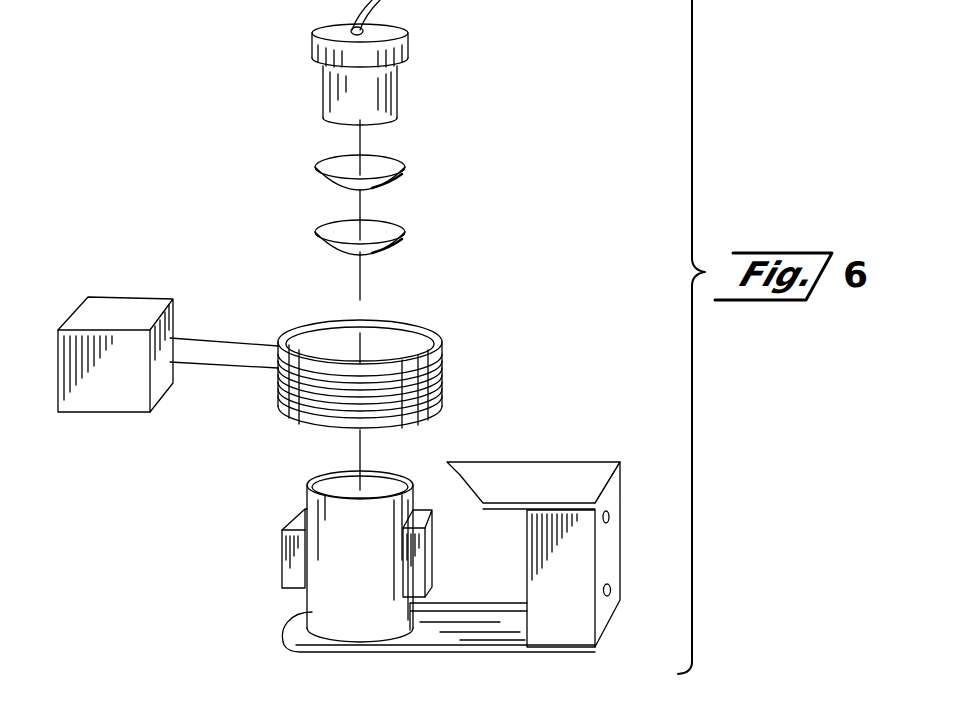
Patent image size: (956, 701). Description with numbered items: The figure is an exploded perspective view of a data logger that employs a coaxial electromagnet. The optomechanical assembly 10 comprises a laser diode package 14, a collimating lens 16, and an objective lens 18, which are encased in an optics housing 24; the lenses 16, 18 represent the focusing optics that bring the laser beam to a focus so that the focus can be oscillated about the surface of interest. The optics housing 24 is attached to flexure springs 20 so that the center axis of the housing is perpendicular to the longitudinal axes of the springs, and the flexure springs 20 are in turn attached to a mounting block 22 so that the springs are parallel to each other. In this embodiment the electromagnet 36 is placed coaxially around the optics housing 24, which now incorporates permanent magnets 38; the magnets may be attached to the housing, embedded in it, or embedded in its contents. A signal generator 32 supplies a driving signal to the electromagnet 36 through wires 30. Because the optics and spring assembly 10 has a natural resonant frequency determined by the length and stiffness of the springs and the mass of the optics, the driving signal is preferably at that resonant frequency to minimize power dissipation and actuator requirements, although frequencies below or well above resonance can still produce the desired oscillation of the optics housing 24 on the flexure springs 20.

The optomechanical assembly 10 is at (272, 611).
The laser diode package 14 is at (395, 95).
The collimating lens 16 is at (403, 172).
The objective lens 18 is at (402, 235).
The flexure springs 20 is at (540, 472).
The mounting block 22 is at (608, 568).
The optics housing 24 is at (325, 605).
The wires 30 is at (232, 342).
The signal generator 32 is at (112, 310).
The electromagnet 36 is at (282, 407).
The permanent magnets 38 is at (282, 533).